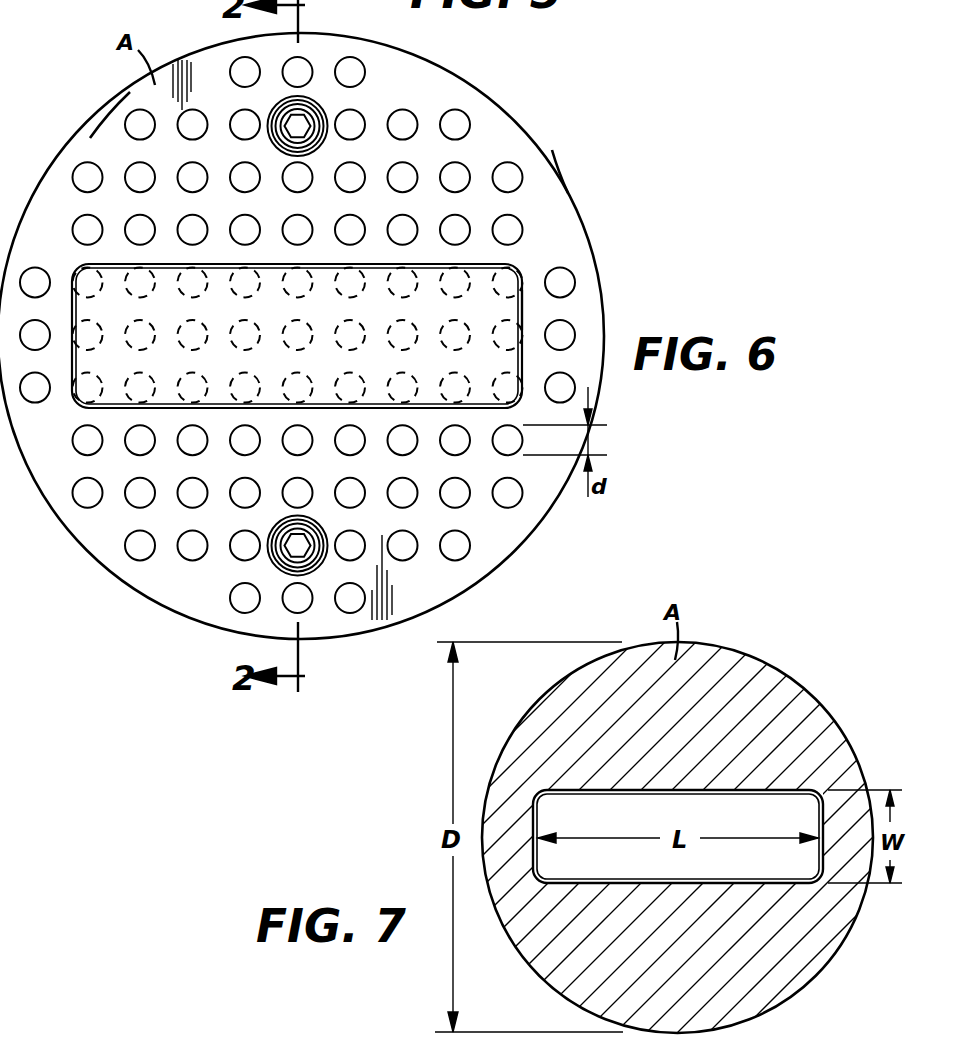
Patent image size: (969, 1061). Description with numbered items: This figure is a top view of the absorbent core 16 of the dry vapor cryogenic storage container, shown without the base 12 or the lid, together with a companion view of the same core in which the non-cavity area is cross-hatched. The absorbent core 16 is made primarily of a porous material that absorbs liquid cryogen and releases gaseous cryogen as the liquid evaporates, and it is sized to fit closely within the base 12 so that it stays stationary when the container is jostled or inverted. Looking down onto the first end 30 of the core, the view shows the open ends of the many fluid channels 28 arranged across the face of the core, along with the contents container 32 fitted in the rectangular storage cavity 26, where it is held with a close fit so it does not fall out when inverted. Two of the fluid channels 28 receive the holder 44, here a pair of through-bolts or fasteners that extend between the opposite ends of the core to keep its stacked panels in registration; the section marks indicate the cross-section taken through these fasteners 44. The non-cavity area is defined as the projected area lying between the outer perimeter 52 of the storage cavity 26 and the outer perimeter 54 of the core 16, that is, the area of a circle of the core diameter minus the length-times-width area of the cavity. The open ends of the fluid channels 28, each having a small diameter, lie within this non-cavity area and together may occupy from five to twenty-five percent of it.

In FIG. 7, the base 12 is at (766, 652).
In FIG. 6, the absorbent core 16 is at (568, 162).
In FIG. 6, the storage cavity 26 is at (92, 262).
In FIG. 7, the storage cavity 26 is at (597, 890).
In FIG. 6, the fluid channels 28 is at (458, 128).
In FIG. 6, the first end 30 is at (93, 138).
In FIG. 6, the contents container 32 is at (480, 288).
In FIG. 6, the holder 44 is at (290, 546).
In FIG. 6, the outer perimeter of the storage cavity 52 is at (527, 308).
In FIG. 6, the outer perimeter of the core 54 is at (572, 194).